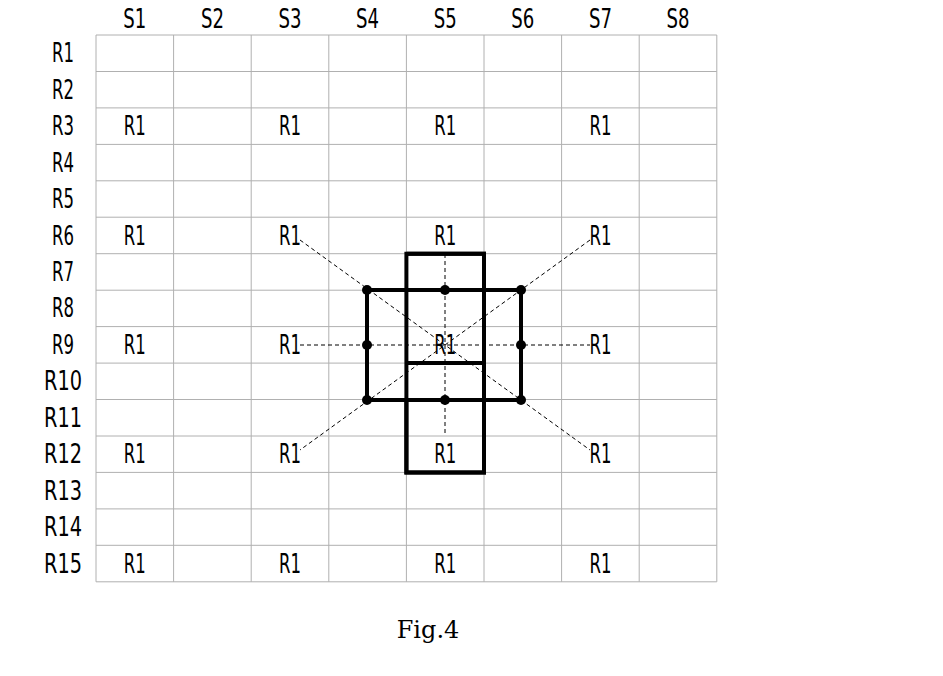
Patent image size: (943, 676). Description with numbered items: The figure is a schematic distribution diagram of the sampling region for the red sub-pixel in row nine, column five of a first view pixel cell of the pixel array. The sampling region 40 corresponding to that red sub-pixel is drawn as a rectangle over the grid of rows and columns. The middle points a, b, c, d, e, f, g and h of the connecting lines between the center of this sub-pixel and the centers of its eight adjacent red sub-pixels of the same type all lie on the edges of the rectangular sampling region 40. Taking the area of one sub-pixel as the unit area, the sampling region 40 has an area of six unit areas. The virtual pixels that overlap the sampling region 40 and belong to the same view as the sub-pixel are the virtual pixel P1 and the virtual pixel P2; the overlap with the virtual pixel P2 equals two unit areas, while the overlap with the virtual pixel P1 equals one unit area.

The sampling region 40 is at (521, 380).
The virtual pixel P1 is at (485, 443).
The virtual pixel P2 is at (485, 275).